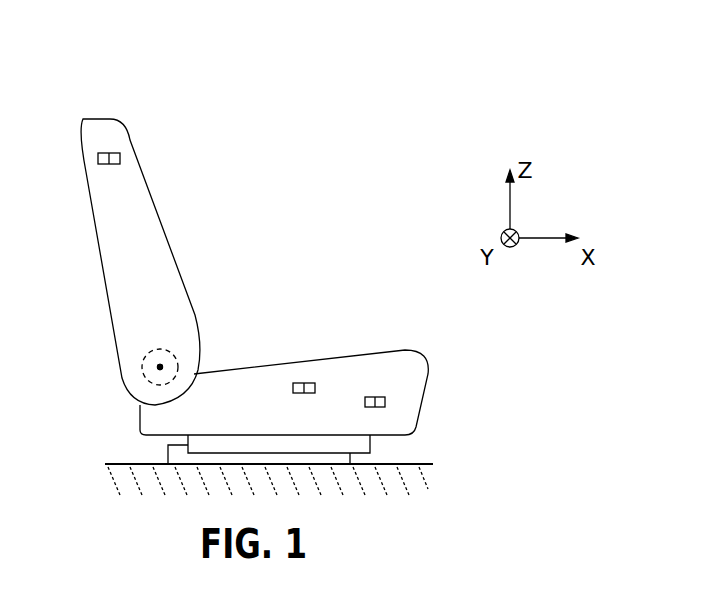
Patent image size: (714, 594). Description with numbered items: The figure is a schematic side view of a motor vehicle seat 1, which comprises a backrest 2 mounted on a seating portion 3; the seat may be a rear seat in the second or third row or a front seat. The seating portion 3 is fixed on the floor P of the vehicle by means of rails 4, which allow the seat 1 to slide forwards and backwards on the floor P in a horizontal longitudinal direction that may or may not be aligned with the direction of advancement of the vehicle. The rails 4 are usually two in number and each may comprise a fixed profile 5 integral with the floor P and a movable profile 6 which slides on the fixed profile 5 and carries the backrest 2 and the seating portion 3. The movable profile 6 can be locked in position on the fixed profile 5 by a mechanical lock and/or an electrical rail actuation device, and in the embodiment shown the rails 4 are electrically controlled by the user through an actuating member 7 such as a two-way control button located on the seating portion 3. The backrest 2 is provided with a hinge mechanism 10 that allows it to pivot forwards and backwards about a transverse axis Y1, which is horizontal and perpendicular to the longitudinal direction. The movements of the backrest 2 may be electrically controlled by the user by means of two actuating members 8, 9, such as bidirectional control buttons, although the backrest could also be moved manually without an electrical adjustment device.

The motor vehicle seat 1 is at (262, 334).
The backrest 2 is at (144, 260).
The seating portion 3 is at (308, 367).
The rails 4 is at (121, 452).
The fixed profile 5 is at (330, 457).
The movable profile 6 is at (357, 445).
The actuating member 7 is at (385, 402).
The actuating member 8 is at (305, 383).
The actuating member 9 is at (128, 150).
The hinge mechanism 10 is at (124, 389).
The transverse axis Y1 is at (157, 366).
The floor P is at (418, 462).